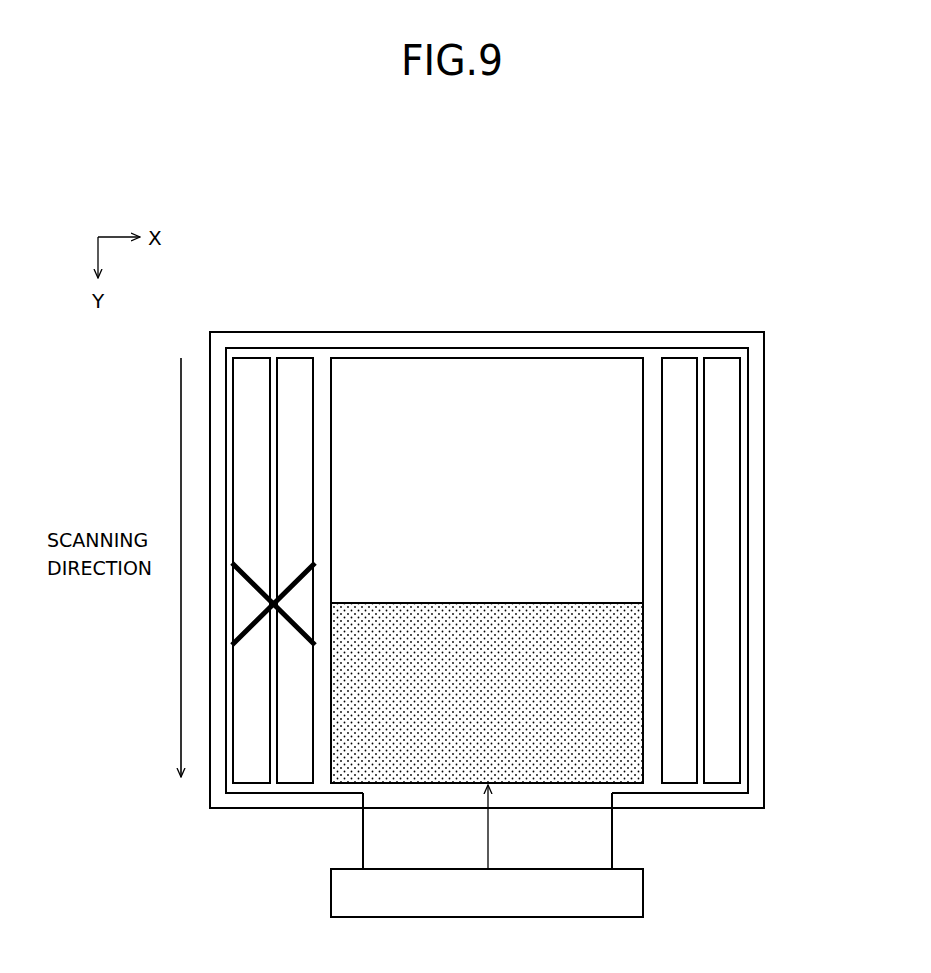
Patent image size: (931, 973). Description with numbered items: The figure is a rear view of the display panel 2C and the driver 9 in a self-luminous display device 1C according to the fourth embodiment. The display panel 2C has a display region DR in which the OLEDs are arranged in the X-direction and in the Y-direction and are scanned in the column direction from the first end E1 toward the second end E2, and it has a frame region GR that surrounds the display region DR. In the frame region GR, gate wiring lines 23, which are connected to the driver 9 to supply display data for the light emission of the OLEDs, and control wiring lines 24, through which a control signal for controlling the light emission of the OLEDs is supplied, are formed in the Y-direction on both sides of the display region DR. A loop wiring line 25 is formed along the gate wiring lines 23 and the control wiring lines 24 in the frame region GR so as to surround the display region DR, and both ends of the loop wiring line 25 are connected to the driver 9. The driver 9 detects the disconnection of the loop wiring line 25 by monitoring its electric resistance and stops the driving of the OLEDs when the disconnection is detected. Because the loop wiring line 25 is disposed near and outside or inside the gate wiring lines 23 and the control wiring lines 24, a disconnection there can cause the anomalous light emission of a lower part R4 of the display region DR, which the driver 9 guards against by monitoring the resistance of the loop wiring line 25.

The self-luminous display device 1C is at (628, 264).
The display panel 2C is at (768, 390).
The frame region GR is at (218, 330).
The first end E1 is at (340, 330).
The second end E2 is at (340, 810).
The gate wiring lines 23 is at (294, 370).
The control wiring lines 24 is at (250, 370).
The loop wiring line 25 is at (613, 840).
The display region DR is at (488, 372).
The lower part R4 is at (622, 696).
The driver 9 is at (488, 919).